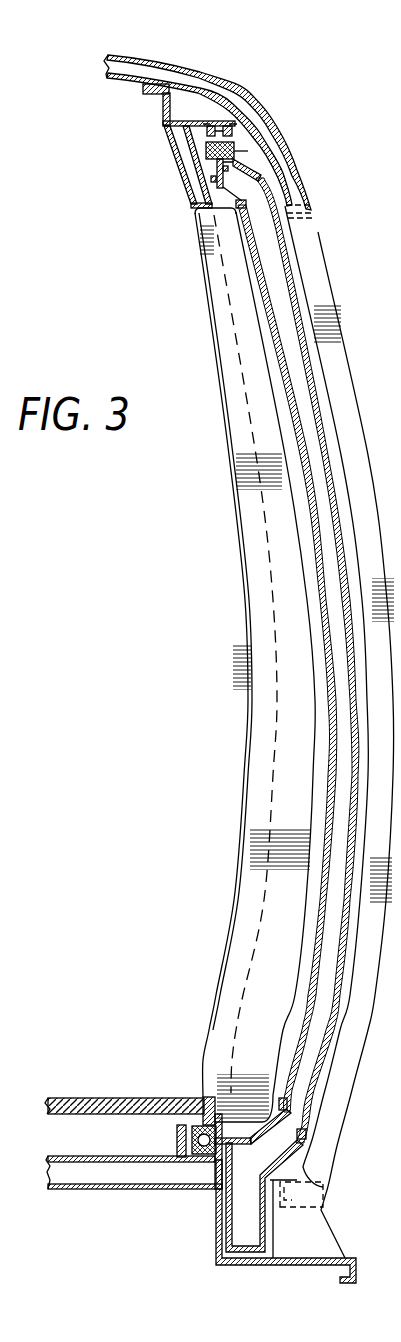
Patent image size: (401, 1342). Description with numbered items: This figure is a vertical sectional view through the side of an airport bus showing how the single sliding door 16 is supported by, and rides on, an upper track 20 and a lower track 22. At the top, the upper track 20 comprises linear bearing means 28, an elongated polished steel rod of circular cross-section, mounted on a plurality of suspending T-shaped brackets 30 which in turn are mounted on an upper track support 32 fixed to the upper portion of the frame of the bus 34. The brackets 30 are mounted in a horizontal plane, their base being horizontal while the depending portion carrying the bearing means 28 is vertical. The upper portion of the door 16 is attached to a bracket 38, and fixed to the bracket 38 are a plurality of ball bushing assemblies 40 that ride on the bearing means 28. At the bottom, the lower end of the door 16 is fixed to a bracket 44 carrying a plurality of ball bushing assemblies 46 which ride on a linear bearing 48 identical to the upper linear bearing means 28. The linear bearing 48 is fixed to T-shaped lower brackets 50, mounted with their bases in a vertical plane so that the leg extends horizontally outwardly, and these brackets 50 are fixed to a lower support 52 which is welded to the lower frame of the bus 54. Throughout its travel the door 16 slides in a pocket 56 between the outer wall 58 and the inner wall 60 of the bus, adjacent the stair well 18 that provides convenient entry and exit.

The sliding door 16 is at (330, 437).
The stair well 18 is at (307, 1258).
The upper track 20 is at (198, 146).
The lower track 22 is at (170, 1138).
The linear bearing means 28 is at (246, 147).
The T-shaped brackets 30 is at (238, 137).
The upper track support 32 is at (163, 103).
The upper portion of the frame of the bus 34 is at (198, 72).
The bracket 38 is at (218, 186).
The ball bushing assemblies 40 is at (248, 152).
The bracket 44 is at (230, 1138).
The ball bushing assemblies 46 is at (204, 1128).
The linear bearing 48 is at (204, 1157).
The T-shaped lower brackets 50 is at (184, 1160).
The lower support 52 is at (150, 1154).
The lower frame of the bus 54 is at (72, 1166).
The pocket 56 is at (299, 272).
The outer wall 58 is at (341, 372).
The inner wall 60 is at (250, 378).